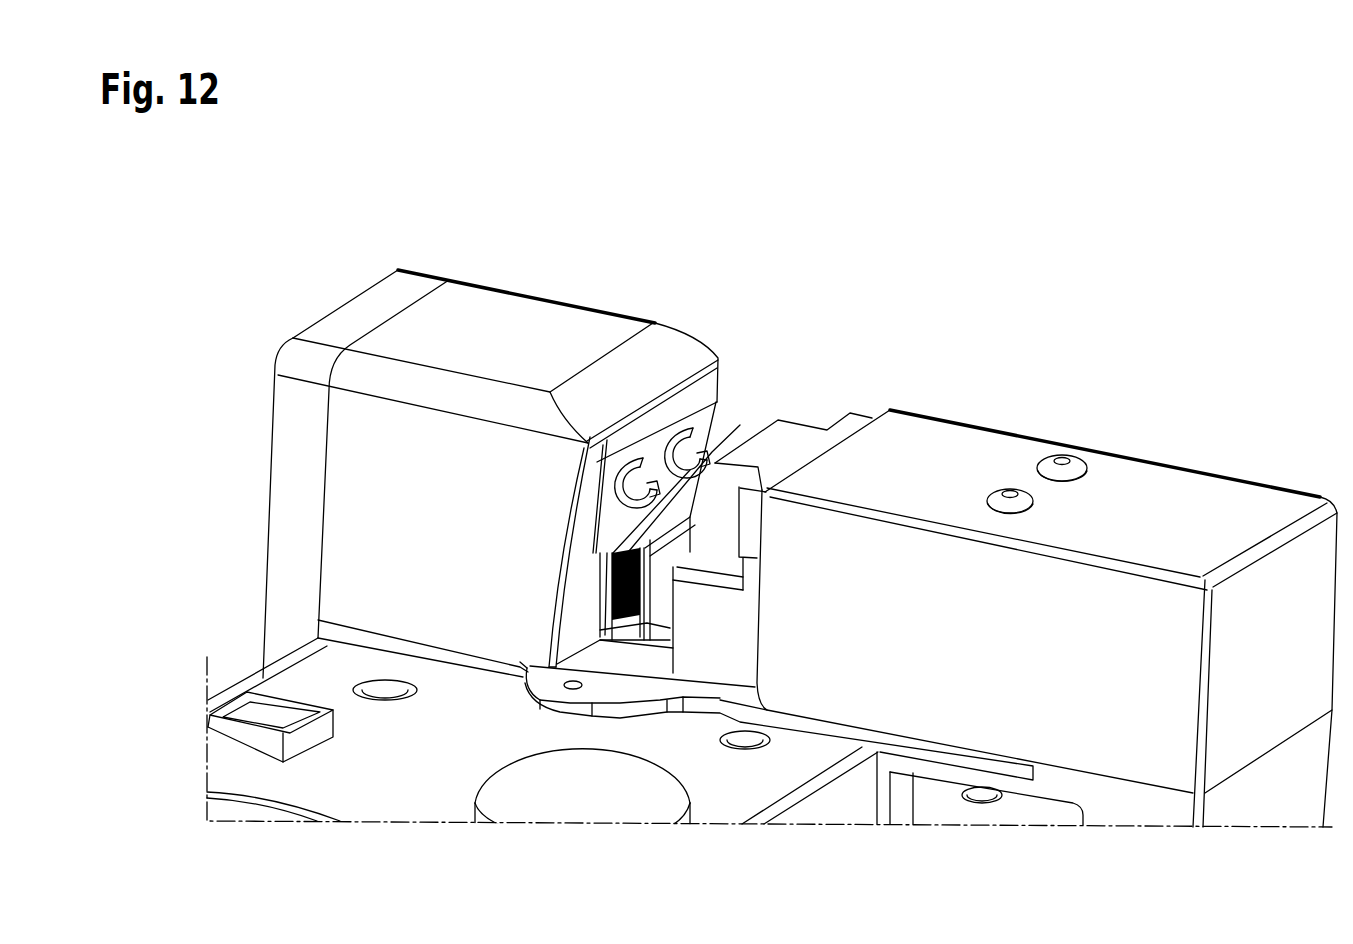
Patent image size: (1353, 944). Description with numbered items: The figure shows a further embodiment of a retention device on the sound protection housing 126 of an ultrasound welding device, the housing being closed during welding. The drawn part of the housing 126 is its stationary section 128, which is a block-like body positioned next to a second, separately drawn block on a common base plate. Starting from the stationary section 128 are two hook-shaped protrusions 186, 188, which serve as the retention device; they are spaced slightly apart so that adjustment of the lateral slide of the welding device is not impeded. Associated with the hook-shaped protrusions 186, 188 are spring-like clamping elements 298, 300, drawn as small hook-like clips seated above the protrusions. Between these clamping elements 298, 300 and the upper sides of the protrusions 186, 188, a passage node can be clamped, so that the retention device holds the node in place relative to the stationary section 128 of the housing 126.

The sound protection housing 126 is at (986, 123).
The stationary section 128 is at (505, 318).
The hook-shaped protrusion 186 is at (620, 521).
The hook-shaped protrusion 188 is at (740, 425).
The spring-like clamping element 298 is at (617, 487).
The spring-like clamping element 300 is at (690, 470).